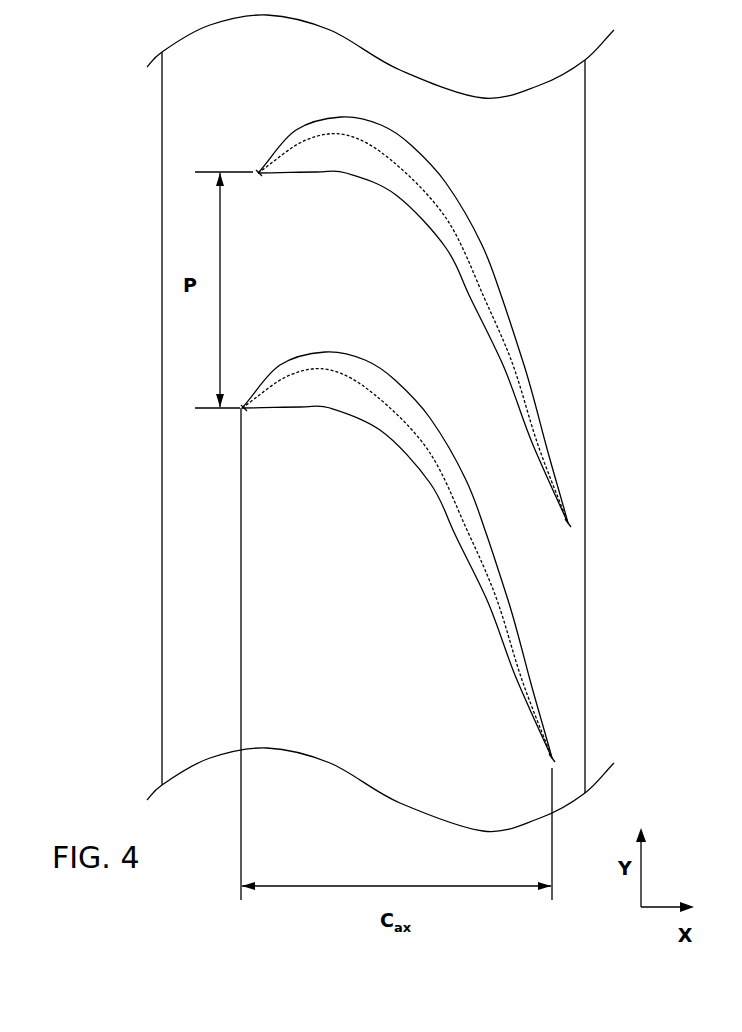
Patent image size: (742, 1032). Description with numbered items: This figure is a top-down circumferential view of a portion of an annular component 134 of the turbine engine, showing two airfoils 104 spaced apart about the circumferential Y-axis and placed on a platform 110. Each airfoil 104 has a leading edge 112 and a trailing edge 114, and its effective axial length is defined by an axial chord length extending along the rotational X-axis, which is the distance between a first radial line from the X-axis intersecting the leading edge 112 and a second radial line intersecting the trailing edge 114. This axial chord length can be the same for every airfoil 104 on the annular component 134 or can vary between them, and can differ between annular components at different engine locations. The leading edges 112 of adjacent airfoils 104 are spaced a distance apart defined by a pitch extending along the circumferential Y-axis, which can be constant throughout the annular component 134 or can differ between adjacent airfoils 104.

The airfoil 104 is at (407, 232).
The platform 110 is at (192, 588).
The leading edge 112 is at (258, 176).
The trailing edge 114 is at (566, 523).
The annular component 134 is at (48, 427).